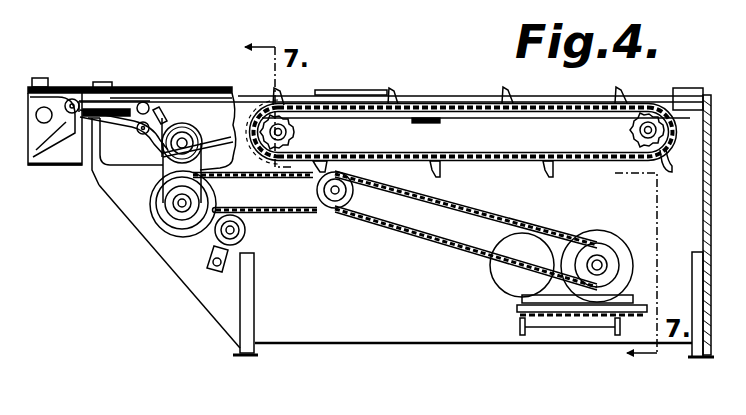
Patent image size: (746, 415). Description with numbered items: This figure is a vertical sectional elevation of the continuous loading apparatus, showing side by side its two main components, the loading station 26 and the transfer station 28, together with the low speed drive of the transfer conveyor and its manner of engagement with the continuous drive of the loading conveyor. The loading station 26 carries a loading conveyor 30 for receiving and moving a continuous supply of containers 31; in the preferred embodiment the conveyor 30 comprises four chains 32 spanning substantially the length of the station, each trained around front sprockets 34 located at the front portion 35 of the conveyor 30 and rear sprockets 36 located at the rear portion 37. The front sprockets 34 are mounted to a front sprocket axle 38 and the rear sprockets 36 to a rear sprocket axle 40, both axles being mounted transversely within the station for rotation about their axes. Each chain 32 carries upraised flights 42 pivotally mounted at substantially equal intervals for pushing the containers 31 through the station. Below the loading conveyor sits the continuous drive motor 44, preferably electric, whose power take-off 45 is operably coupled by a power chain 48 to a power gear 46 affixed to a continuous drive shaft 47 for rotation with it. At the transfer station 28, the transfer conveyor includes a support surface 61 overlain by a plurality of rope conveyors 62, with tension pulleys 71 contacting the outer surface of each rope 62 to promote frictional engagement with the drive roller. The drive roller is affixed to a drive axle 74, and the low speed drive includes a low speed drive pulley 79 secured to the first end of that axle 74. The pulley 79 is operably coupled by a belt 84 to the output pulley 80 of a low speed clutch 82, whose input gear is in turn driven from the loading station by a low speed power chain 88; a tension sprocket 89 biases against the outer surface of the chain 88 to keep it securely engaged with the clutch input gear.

The loading station 26 is at (437, 67).
The transfer station 28 is at (113, 153).
The loading conveyor 30 is at (648, 97).
The containers 31 is at (345, 91).
The chains 32 is at (535, 103).
The front sprockets 34 is at (672, 165).
The front portion 35 is at (713, 226).
The rear sprockets 36 is at (297, 139).
The rear portion 37 is at (253, 102).
The front sprocket axle 38 is at (641, 131).
The rear sprocket axle 40 is at (280, 122).
The flights 42 is at (396, 97).
The continuous drive motor 44 is at (612, 235).
The power take-off 45 is at (612, 265).
The power gear 46 is at (349, 196).
The continuous drive shaft 47 is at (335, 197).
The power chain 48 is at (487, 213).
The support surface 61 is at (143, 102).
The rope conveyors 62 is at (178, 97).
The tension pulleys 71 is at (135, 131).
The drive axle 74 is at (172, 147).
The low speed drive pulley 79 is at (190, 131).
The output pulley 80 is at (176, 206).
The low speed clutch 82 is at (206, 222).
The belt 84 is at (205, 187).
The low speed power chain 88 is at (298, 215).
The tension sprocket 89 is at (247, 208).